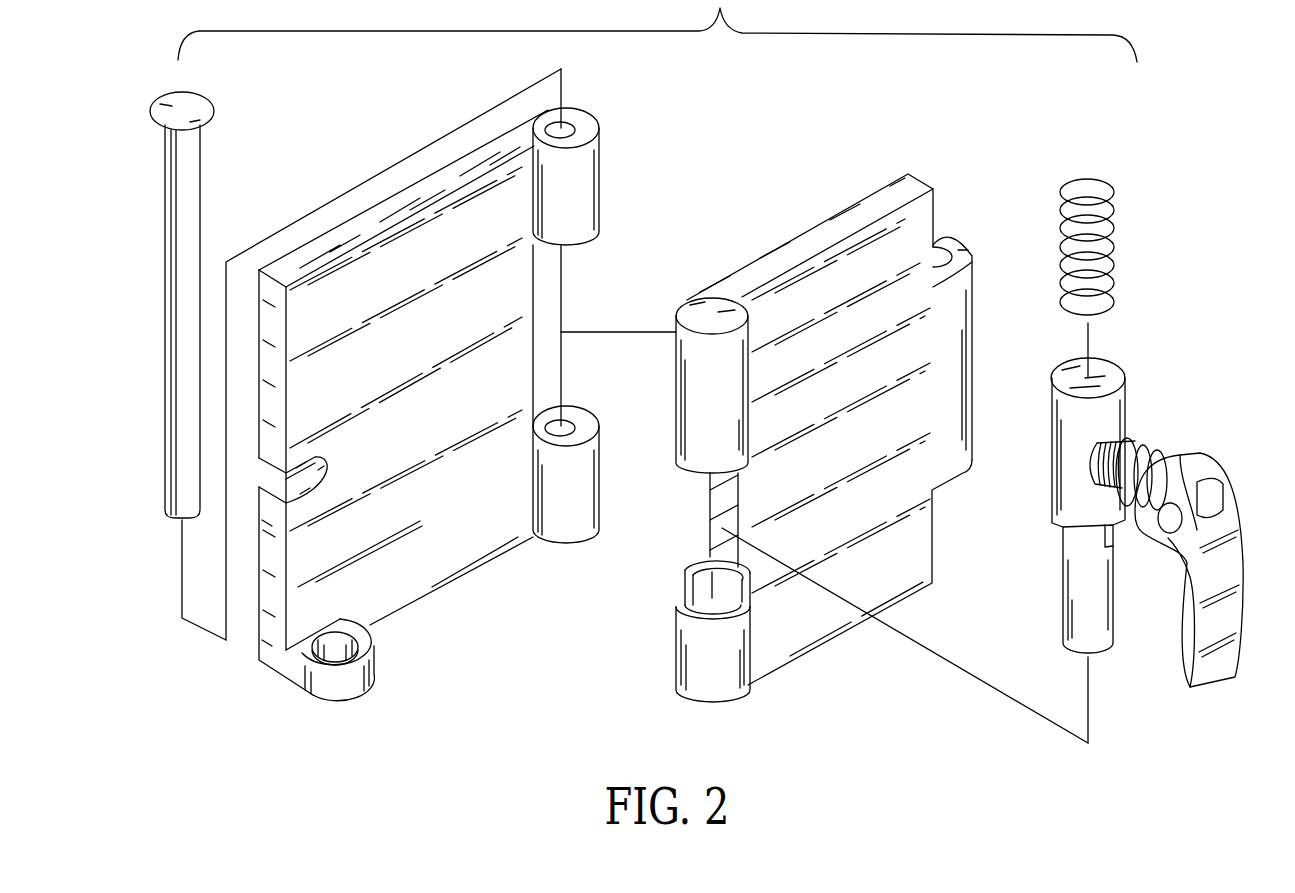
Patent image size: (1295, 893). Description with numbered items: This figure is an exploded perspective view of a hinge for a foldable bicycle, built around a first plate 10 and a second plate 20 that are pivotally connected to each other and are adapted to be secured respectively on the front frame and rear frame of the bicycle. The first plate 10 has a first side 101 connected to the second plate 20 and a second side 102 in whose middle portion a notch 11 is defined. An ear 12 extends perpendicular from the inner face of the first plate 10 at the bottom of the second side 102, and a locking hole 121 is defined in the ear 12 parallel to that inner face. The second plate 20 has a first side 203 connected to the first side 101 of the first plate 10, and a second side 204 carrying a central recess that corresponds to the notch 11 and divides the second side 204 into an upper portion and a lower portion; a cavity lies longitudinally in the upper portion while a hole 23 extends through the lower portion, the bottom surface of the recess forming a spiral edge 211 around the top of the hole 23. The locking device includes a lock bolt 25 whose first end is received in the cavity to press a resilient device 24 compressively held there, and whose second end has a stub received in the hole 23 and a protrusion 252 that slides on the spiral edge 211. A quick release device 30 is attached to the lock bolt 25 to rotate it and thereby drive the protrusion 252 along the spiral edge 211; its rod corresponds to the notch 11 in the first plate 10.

The first plate 10 is at (442, 540).
The first side 101 is at (535, 312).
The second side 102 is at (270, 595).
The notch 11 is at (263, 472).
The ear 12 is at (343, 690).
The locking hole 121 is at (340, 647).
The second plate 20 is at (840, 615).
The first side 203 is at (932, 537).
The second side 204 is at (697, 420).
The spiral edge 211 is at (677, 608).
The hole 23 is at (728, 593).
The resilient device 24 is at (1107, 178).
The lock bolt 25 is at (1107, 423).
The protrusion 252 is at (1125, 557).
The quick release device 30 is at (1250, 472).